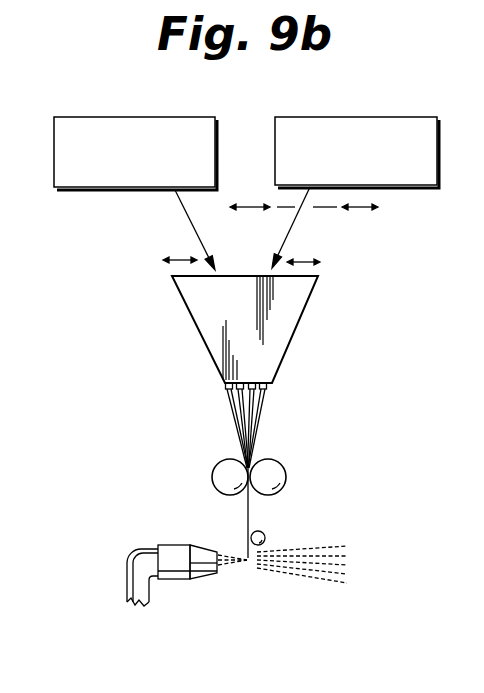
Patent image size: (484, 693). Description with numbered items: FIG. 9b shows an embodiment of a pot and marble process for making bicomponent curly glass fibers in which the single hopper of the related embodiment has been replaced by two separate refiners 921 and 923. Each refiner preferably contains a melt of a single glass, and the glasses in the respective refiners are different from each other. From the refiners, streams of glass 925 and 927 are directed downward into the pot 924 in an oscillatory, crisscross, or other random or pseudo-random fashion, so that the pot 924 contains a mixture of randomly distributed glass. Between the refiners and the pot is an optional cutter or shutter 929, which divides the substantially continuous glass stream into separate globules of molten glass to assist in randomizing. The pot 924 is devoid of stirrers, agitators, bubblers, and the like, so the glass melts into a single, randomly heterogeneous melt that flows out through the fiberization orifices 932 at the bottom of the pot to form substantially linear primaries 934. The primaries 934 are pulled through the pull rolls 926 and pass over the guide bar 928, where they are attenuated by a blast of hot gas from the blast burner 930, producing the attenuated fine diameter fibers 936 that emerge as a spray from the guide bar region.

The refiner 921 is at (130, 117).
The refiner 923 is at (367, 117).
The stream of glass 925 is at (188, 223).
The stream of glass 927 is at (298, 220).
The cutter or shutter 929 is at (282, 207).
The pot 924 is at (291, 340).
The fiberization orifices 932 is at (268, 386).
The primaries 934 is at (258, 430).
The pull rolls 926 is at (286, 477).
The guide bar 928 is at (267, 535).
The blast burner 930 is at (175, 545).
The attenuated fine diameter fibers 936 is at (282, 568).